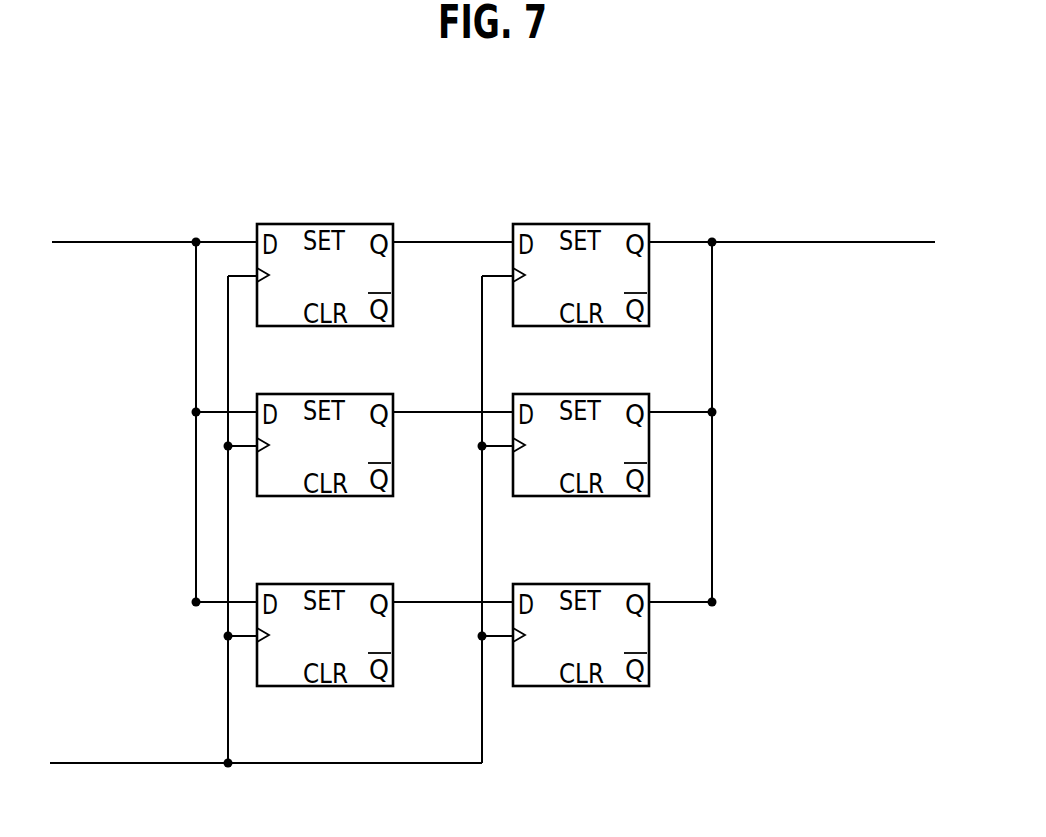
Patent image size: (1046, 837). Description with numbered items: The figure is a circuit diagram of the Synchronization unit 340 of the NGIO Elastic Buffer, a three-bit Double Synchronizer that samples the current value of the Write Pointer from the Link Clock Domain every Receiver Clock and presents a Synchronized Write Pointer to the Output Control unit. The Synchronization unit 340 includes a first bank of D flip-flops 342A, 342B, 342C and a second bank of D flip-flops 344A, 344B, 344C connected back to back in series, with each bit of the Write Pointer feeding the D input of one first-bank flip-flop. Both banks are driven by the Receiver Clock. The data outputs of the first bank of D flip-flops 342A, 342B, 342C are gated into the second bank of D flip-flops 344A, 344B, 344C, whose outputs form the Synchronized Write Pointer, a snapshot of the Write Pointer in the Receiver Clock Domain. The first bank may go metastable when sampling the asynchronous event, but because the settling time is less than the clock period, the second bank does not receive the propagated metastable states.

The Synchronization unit 340 is at (790, 114).
The D flip-flop 342A is at (325, 223).
The D flip-flop 342B is at (257, 470).
The D flip-flop 342C is at (323, 686).
The D flip-flop 344A is at (582, 224).
The D flip-flop 344B is at (650, 448).
The D flip-flop 344C is at (649, 668).